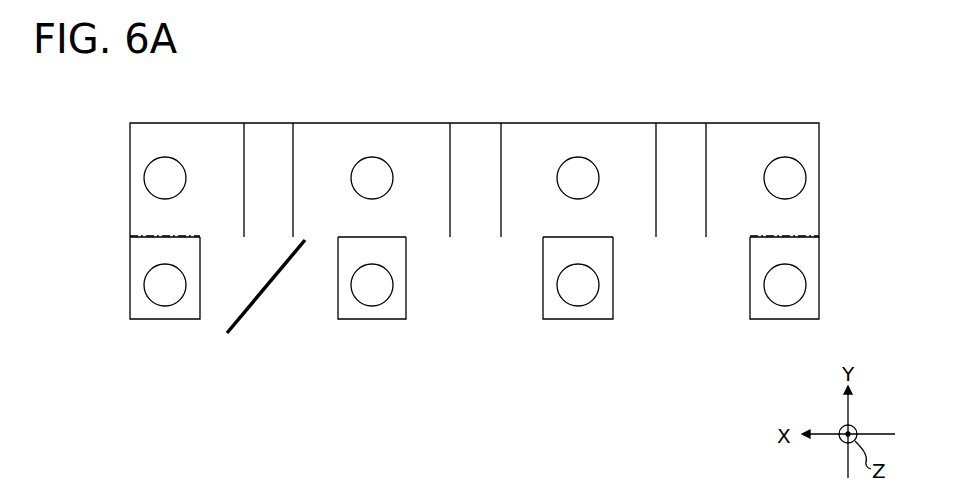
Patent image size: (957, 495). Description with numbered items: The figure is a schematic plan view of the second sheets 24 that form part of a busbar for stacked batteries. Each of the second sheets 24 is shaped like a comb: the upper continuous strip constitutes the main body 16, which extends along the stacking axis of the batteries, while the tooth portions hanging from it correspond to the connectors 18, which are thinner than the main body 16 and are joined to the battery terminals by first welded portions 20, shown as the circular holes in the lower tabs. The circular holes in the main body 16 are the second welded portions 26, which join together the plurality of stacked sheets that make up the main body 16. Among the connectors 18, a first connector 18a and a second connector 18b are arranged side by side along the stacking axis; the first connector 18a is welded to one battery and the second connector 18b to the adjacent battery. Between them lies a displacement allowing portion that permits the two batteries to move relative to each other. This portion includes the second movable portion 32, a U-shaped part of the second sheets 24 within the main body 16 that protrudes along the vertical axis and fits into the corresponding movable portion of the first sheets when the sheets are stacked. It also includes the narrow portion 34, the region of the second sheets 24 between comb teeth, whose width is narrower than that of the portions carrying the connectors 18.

The main body 16 is at (511, 140).
The connectors 18 is at (472, 306).
The first connector 18a is at (140, 254).
The second connector 18b is at (345, 255).
The first welded portions 20 is at (782, 306).
The second sheets 24 is at (489, 453).
The second welded portions 26 is at (785, 157).
The second movable portion 32 is at (244, 152).
The narrow portion 34 is at (254, 301).